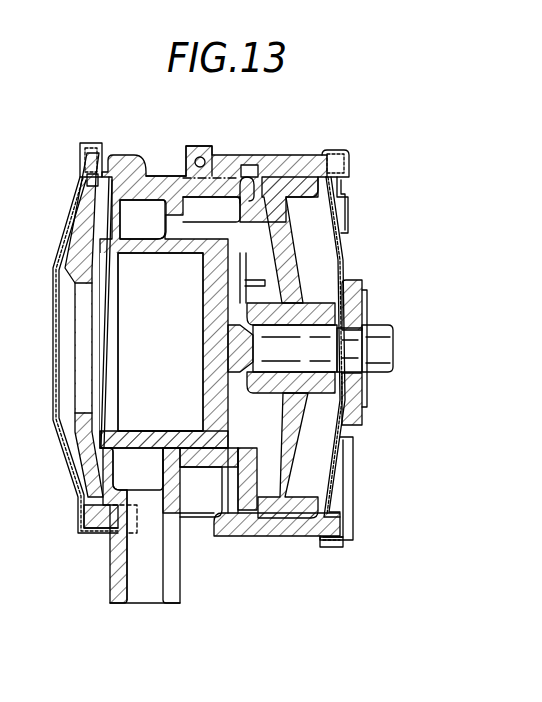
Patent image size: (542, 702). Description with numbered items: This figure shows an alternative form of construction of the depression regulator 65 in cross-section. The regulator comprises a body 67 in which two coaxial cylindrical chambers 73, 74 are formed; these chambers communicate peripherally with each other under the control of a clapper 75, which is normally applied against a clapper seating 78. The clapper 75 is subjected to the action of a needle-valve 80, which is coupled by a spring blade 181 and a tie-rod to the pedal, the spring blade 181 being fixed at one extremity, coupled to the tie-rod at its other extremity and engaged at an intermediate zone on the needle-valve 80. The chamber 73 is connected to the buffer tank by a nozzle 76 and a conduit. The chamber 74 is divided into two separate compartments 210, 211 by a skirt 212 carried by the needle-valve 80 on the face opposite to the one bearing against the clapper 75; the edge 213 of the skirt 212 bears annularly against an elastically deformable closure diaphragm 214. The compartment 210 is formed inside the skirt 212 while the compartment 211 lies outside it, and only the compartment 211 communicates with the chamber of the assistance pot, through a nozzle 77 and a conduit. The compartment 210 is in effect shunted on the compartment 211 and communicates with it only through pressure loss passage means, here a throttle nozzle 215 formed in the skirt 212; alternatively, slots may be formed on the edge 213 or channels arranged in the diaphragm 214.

The depression regulator 65 is at (145, 170).
The body 67 is at (300, 162).
The chamber 73 is at (221, 205).
The chamber 74 is at (126, 468).
The clapper 75 is at (268, 243).
The nozzle 76 is at (195, 162).
The nozzle 77 is at (145, 585).
The clapper seating 78 is at (250, 220).
The needle-valve 80 is at (220, 449).
The spring blade 181 is at (365, 273).
The compartment 210 is at (179, 333).
The compartment 211 is at (140, 482).
The skirt 212 is at (103, 268).
The edge 213 is at (103, 262).
The closure diaphragm 214 is at (86, 224).
The throttle nozzle 215 is at (140, 446).